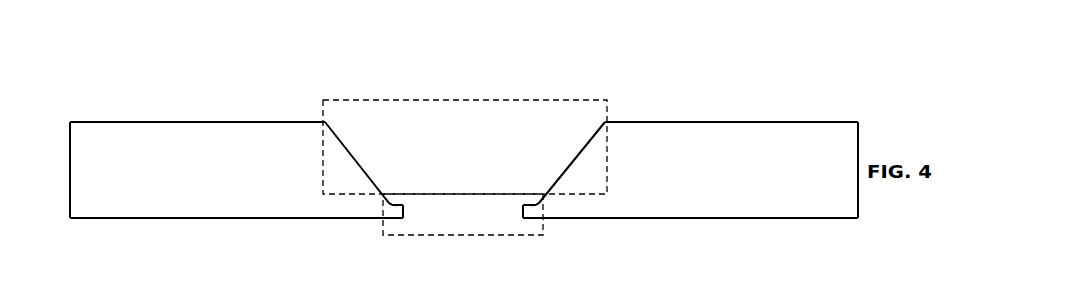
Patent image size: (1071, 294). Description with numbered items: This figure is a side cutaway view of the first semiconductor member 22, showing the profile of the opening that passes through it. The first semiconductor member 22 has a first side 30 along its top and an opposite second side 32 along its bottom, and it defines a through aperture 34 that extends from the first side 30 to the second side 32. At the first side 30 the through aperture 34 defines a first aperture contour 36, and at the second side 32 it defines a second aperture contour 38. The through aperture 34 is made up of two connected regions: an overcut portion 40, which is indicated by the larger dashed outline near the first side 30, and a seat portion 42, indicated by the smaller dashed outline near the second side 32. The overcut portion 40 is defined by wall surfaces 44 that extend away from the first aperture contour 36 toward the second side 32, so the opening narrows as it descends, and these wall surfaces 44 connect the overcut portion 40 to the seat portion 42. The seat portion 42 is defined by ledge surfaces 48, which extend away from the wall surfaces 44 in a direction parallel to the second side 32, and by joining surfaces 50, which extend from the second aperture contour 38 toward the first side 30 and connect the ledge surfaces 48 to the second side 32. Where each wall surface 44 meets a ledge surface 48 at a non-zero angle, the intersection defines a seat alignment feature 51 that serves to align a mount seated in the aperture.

The first semiconductor member 22 is at (688, 122).
The first side 30 is at (102, 121).
The second side 32 is at (107, 219).
The through aperture 34 is at (489, 111).
The first aperture contour 36 is at (325, 121).
The second aperture contour 38 is at (403, 219).
The overcut portion 40 is at (350, 100).
The seat portion 42 is at (455, 236).
The wall surfaces 44 is at (360, 160).
The ledge surfaces 48 is at (396, 200).
The joining surfaces 50 is at (522, 208).
The seat alignment feature 51 is at (392, 202).